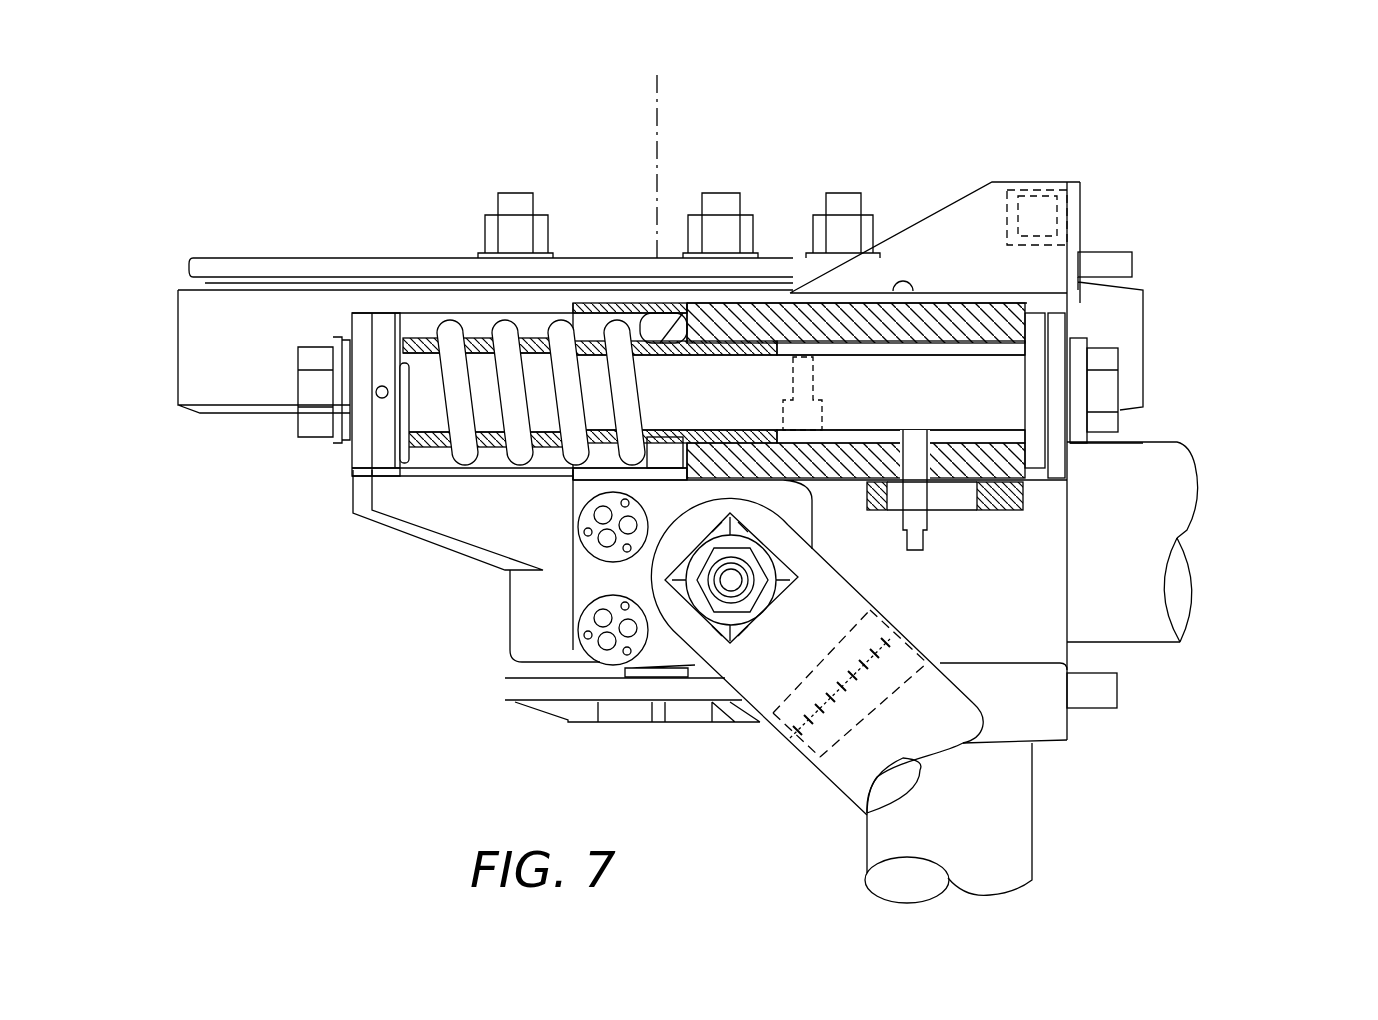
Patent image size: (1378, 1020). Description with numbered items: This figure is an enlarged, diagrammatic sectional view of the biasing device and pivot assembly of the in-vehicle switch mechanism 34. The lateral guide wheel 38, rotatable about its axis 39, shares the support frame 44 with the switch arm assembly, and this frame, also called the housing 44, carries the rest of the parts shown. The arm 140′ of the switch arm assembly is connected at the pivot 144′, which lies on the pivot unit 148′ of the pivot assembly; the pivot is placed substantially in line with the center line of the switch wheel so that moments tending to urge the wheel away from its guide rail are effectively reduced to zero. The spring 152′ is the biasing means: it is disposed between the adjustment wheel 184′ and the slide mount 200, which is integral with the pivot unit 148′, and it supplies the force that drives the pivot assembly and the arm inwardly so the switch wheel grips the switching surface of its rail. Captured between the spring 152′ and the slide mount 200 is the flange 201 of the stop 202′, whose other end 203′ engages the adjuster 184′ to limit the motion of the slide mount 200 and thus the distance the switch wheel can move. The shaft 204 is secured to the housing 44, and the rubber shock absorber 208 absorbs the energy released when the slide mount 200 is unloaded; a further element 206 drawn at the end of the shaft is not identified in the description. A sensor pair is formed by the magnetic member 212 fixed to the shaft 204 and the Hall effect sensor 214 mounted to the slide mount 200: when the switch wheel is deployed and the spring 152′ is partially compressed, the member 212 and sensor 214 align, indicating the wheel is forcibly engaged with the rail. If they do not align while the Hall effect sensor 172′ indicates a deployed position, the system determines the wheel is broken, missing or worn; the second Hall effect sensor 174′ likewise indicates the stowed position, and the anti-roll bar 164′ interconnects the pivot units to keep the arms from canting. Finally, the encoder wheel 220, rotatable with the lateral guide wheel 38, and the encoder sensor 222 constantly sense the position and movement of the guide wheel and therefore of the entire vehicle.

The in-vehicle switch mechanism 34 is at (1205, 221).
The lateral guide wheel 38 is at (200, 345).
The axis 39 is at (650, 95).
The support frame 44 is at (1033, 533).
The arm 140′ is at (800, 773).
The pivot 144′ is at (731, 585).
The pivot unit 148′ is at (600, 587).
The spring 152′ is at (533, 340).
The anti-roll bar 164′ is at (1037, 186).
The Hall effect sensor 172′ is at (573, 538).
The Hall effect sensor 174′ is at (585, 647).
The adjustment wheel 184′ is at (382, 327).
The slide mount 200 is at (660, 300).
The flange 201 is at (638, 315).
The stop 202′ is at (453, 322).
The other end of stop 203′ is at (460, 437).
The shaft 204 is at (812, 497).
The nut 206 is at (1107, 382).
The rubber shock absorber 208 is at (1033, 335).
The magnetic member 212 is at (813, 373).
The Hall effect sensor 214 is at (933, 522).
The encoder wheel 220 is at (543, 710).
The encoder sensor 222 is at (1090, 690).